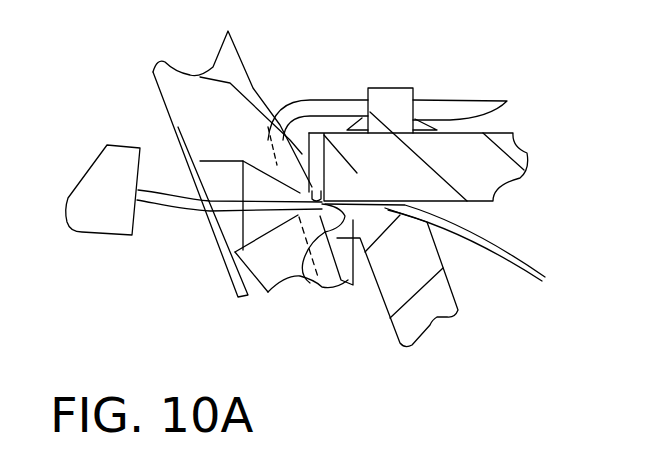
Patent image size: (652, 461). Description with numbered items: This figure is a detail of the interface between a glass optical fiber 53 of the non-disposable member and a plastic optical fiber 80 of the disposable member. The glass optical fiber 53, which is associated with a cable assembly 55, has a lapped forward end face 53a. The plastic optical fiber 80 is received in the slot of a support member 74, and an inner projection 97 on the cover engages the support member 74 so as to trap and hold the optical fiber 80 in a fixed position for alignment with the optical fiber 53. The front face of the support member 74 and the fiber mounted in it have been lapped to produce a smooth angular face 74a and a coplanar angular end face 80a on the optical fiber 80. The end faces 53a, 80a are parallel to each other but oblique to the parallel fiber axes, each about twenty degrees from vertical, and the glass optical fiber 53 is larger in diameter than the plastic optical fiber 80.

The optical fiber 53 is at (197, 208).
The forward end of optical fiber 53a is at (297, 278).
The cable assembly 55 is at (118, 136).
The support member 74 is at (356, 242).
The angular face of support member 74a is at (277, 168).
The optical fiber 80 is at (504, 251).
The end face of optical fiber 80a is at (322, 194).
The inner projection 97 is at (330, 125).